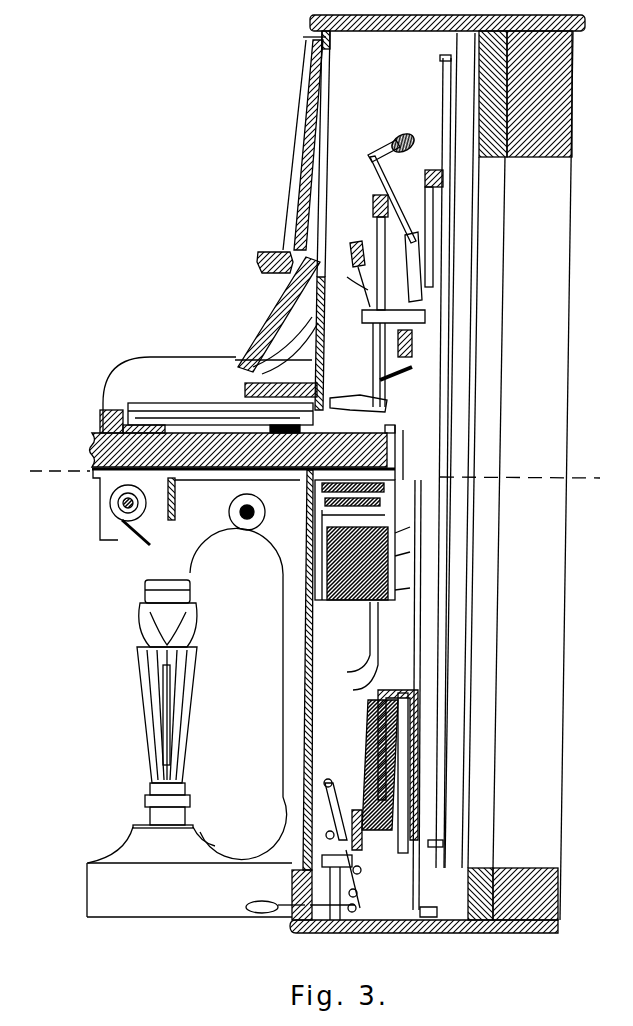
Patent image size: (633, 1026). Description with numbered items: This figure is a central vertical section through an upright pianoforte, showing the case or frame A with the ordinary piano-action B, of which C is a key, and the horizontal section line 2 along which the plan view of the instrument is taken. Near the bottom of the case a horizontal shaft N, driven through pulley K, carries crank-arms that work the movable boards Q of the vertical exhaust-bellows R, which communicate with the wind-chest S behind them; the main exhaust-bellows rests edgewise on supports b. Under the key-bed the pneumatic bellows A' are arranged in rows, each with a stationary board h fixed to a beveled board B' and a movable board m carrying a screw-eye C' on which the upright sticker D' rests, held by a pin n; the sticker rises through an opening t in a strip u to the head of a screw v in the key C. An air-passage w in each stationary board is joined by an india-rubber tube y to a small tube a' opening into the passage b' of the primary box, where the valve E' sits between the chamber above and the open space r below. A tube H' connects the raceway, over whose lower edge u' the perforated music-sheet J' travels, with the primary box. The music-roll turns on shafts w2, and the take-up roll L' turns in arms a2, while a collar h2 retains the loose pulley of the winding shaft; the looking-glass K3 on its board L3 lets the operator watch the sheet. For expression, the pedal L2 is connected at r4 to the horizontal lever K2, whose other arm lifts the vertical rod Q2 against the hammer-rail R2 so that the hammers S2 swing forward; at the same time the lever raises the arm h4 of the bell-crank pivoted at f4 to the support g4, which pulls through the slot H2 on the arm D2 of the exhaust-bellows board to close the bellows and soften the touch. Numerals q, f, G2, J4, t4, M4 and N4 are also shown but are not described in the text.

The case or frame A is at (410, 474).
The section line 2 is at (311, 477).
The key C is at (206, 395).
The india-rubber tube H' is at (217, 425).
The upright rod or sticker D' is at (258, 452).
The strip u is at (402, 432).
The board B' is at (339, 540).
The screw-eye C' is at (282, 537).
The valve E' is at (313, 499).
The pulley K is at (110, 506).
The looking-glass K3 is at (122, 525).
The board L3 is at (140, 530).
The take-up roll L' is at (247, 531).
The perforated music-sheet J' is at (154, 547).
The lower edge u' is at (178, 547).
The collar h2 is at (228, 515).
The arms a2 is at (204, 567).
The india-rubber tube y is at (282, 570).
The air-passage w is at (310, 576).
The shafts or pinions w2 is at (282, 493).
The air-passage b' is at (294, 498).
The small tube a' is at (290, 511).
The open space r is at (312, 522).
The contact q is at (400, 493).
The stationary board h is at (372, 518).
The pneumatic bellows A' is at (390, 571).
The pin n is at (392, 602).
The movable board m is at (388, 606).
The piano-action B is at (386, 276).
The hammers S2 is at (403, 157).
The hammer-rail R2 is at (373, 206).
The vertical rod Q2 is at (377, 232).
The screw v is at (414, 401).
The opening t is at (339, 421).
The base M4 is at (247, 766).
The wind-chest S is at (405, 715).
The exhaust-bellows R is at (368, 736).
The movable board Q is at (368, 758).
The wire f is at (347, 672).
The longitudinal slot H2 is at (336, 845).
The pedal link G2 is at (353, 777).
The arm D2 is at (422, 788).
The link J4 is at (330, 810).
The pivot f4 is at (328, 835).
The support g4 is at (325, 858).
The connection r4 is at (300, 877).
The pedal L2 is at (275, 899).
The arm h4 is at (351, 799).
The horizontal lever K2 is at (372, 858).
The horizontal shaft N is at (362, 871).
The pivot t4 is at (360, 893).
The supports b is at (424, 879).
The bottom board N4 is at (356, 932).